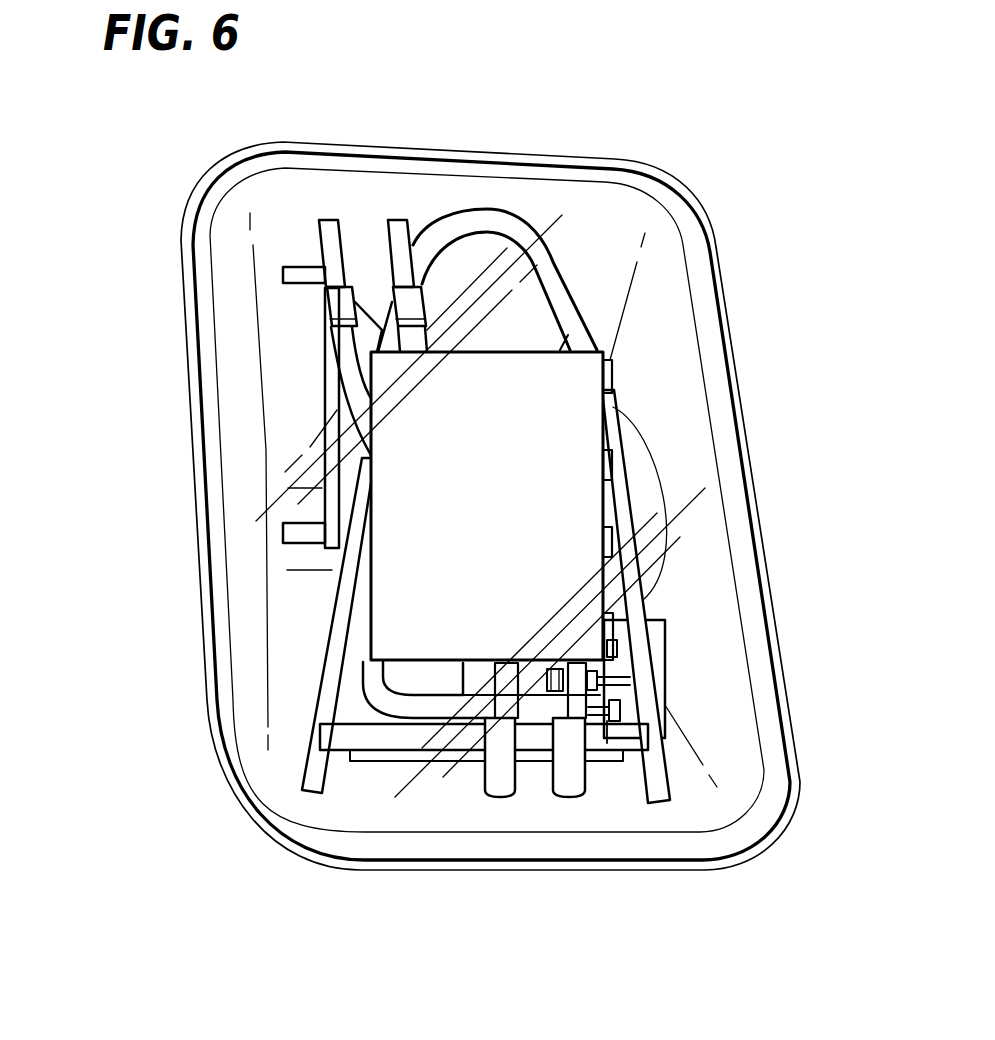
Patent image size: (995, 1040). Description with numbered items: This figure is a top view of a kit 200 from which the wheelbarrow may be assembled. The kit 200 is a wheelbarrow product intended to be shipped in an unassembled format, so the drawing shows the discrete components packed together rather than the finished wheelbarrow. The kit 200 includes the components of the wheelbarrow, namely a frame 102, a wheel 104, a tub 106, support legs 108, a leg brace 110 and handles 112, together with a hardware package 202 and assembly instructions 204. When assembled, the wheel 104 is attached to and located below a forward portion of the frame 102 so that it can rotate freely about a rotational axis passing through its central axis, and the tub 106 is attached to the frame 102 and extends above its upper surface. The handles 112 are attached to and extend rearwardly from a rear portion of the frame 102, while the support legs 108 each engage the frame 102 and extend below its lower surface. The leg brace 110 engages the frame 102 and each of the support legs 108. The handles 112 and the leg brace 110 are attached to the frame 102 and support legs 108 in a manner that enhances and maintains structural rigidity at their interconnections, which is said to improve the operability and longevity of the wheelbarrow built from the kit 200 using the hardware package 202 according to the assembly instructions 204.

The kit 200 is at (187, 168).
The frame 102 is at (500, 213).
The wheel 104 is at (643, 463).
The tub 106 is at (413, 147).
The support legs 108 is at (401, 703).
The leg brace 110 is at (332, 397).
The handles 112 is at (385, 240).
The hardware package 202 is at (655, 633).
The assembly instructions 204 is at (410, 577).